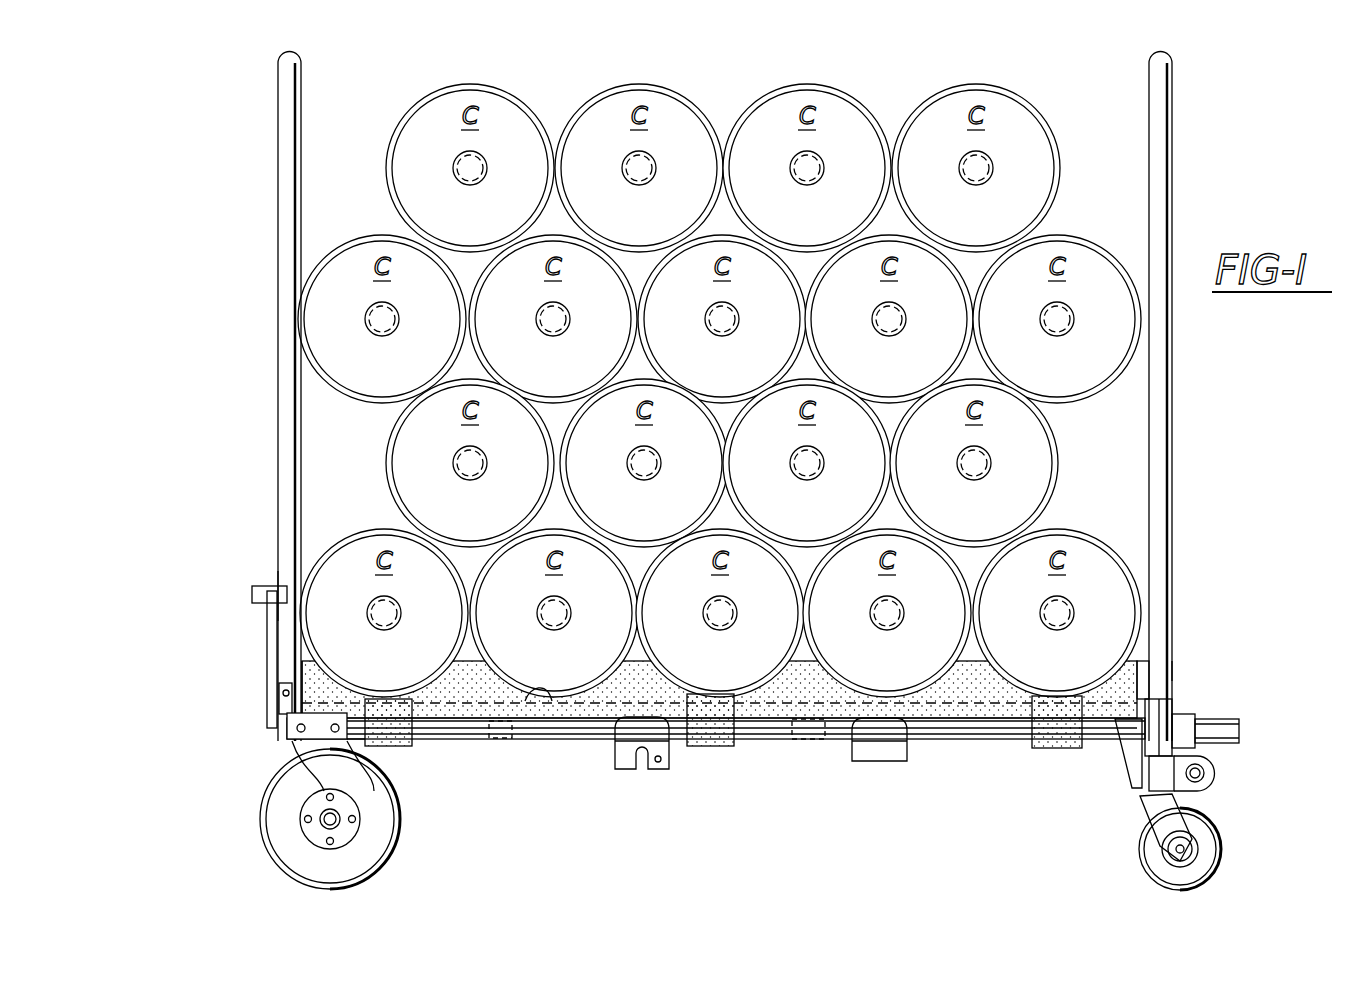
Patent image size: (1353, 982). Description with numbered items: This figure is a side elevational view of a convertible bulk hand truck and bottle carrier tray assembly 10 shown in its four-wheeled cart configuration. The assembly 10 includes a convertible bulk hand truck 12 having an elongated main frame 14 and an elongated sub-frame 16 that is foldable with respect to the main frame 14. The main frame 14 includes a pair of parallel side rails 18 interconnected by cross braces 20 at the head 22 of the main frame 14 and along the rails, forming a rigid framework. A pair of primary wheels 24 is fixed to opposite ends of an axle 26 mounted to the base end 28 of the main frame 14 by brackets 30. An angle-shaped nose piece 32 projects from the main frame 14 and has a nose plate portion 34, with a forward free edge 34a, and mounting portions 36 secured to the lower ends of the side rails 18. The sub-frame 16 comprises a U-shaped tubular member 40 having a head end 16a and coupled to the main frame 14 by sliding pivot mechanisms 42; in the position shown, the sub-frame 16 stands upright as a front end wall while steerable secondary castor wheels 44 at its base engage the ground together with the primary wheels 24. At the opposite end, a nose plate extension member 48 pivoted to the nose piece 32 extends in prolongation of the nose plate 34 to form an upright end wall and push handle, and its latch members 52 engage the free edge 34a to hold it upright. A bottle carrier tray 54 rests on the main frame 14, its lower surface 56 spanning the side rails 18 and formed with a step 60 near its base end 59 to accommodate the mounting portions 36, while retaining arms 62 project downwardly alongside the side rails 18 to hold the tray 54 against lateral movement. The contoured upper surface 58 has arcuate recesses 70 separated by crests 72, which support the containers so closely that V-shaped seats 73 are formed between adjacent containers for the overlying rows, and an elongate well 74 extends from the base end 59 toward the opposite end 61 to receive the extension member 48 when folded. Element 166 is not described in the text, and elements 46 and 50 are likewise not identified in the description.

The convertible bulk hand truck and bottle carrier tray assembly 10 is at (1260, 213).
The convertible bulk hand truck 12 is at (1192, 556).
The main frame 14 is at (987, 744).
The sub-frame 16 is at (1174, 436).
The head end 16a is at (1168, 100).
The post lower portion 166 is at (1170, 602).
The side rails 18 is at (930, 742).
The cross braces 20 is at (497, 738).
The head 22 is at (1238, 730).
The primary wheels 24 is at (258, 824).
The axle 26 is at (337, 814).
The base end 28 is at (328, 742).
The brackets 30 is at (292, 756).
The nose piece 32 is at (262, 719).
The nose plate portion 34 is at (266, 620).
The forward free edge 34a is at (252, 594).
The mounting portions 36 is at (332, 712).
The U-shaped tubular member 40 is at (1125, 765).
The sliding pivot mechanisms 42 is at (1172, 710).
The secondary castor wheels 44 is at (1220, 836).
The clip 46 is at (625, 770).
The nose plate extension member 48 is at (276, 181).
The small bracket 50 is at (284, 700).
The latch members 52 is at (274, 595).
The bottle carrier tray 54 is at (1172, 670).
The lower surface 56 is at (782, 742).
The upper surface 58 is at (822, 667).
The base end 59 is at (300, 672).
The step 60 is at (352, 742).
The opposite end 61 is at (1147, 686).
The retaining arms 62 is at (398, 745).
The recesses 70 is at (445, 668).
The crests 72 is at (312, 658).
The V-shaped seats 73 is at (466, 250).
The well 74 is at (535, 700).